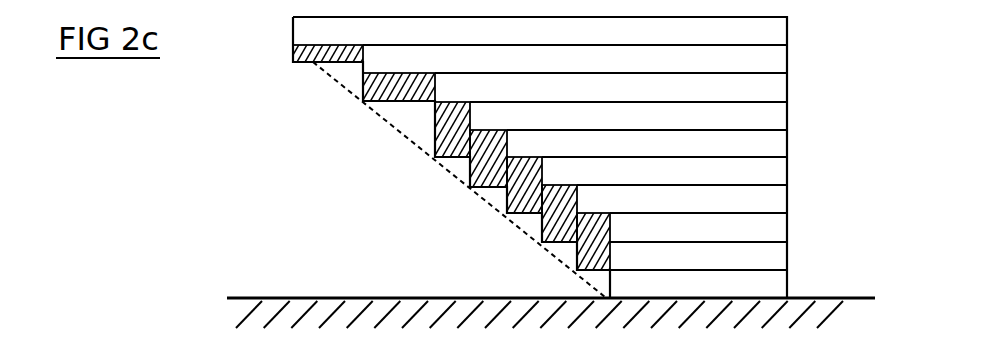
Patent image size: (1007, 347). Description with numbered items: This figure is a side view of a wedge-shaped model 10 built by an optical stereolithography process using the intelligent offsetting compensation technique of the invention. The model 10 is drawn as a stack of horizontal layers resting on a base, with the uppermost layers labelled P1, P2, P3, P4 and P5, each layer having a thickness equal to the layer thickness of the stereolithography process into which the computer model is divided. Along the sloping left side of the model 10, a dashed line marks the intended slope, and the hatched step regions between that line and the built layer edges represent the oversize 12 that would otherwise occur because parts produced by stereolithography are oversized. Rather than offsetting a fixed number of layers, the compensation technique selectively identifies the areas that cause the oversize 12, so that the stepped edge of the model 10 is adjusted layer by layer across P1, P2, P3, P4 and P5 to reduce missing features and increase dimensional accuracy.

The wedge-shaped model 10 is at (513, 157).
The oversize 12 is at (435, 142).
The layer P1 is at (685, 146).
The layer P2 is at (668, 118).
The layer P3 is at (649, 90).
The layer P4 is at (632, 62).
The layer P5 is at (596, 34).